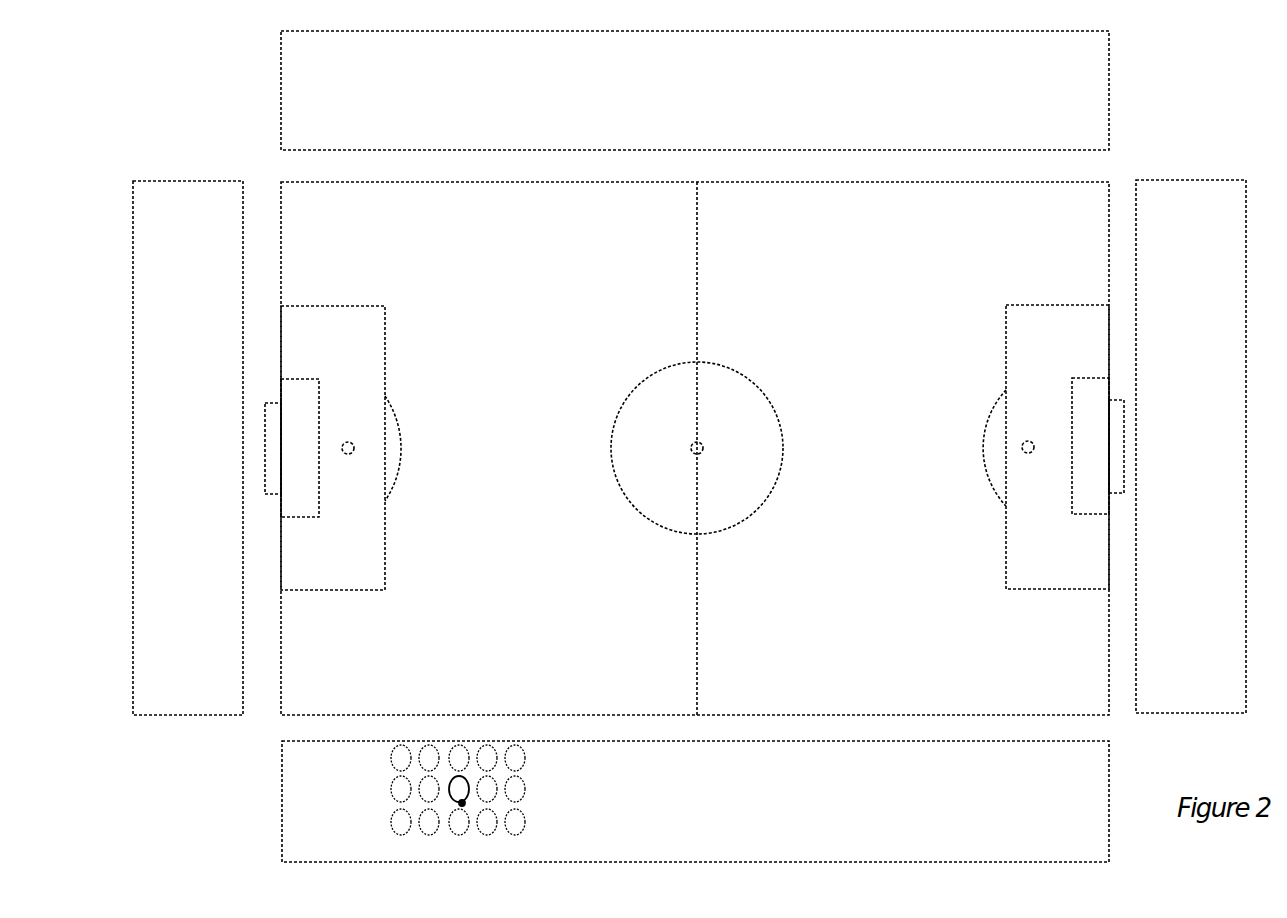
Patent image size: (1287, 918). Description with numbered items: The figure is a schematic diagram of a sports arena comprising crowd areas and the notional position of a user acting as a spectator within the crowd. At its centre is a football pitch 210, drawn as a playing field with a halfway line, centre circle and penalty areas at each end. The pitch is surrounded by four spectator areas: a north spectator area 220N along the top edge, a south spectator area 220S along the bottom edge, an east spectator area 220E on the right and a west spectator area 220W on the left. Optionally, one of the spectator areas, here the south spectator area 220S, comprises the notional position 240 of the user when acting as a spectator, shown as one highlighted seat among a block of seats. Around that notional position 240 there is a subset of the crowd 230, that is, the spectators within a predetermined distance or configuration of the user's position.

The football pitch 210 is at (929, 670).
The north spectator area 220N is at (695, 90).
The south spectator area 220S is at (695, 801).
The east spectator area 220E is at (1191, 446).
The west spectator area 220W is at (188, 448).
The subset of the crowd 230 is at (434, 798).
The notional position of the user 240 is at (462, 803).